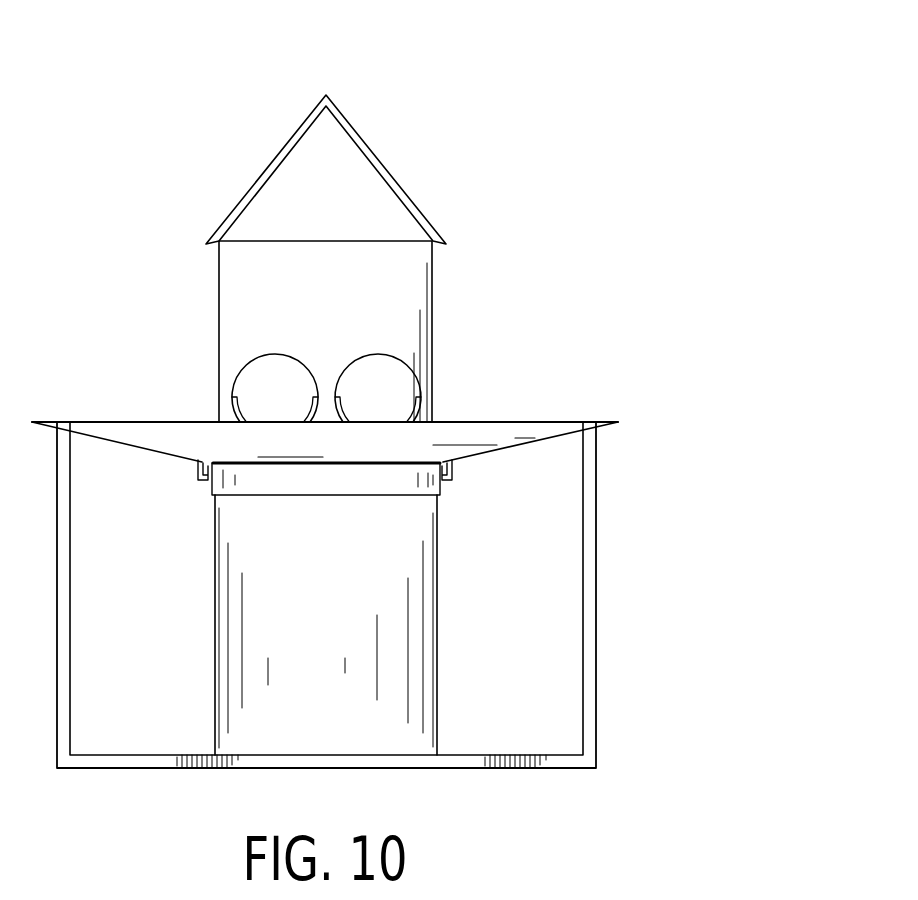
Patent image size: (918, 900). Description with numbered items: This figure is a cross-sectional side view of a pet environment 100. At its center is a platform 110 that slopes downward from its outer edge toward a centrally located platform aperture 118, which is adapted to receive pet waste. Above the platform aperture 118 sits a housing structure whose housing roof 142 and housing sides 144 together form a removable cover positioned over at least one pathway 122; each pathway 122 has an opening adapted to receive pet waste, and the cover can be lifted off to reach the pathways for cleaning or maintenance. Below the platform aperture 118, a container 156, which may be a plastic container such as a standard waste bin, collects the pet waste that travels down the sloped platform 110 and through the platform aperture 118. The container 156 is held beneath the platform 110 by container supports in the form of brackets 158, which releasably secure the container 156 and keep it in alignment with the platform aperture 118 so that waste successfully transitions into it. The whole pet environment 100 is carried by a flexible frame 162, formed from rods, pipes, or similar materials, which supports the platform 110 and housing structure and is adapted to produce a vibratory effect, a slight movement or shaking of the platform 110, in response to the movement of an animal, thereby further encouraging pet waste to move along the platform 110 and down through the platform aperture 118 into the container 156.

The pet environment 100 is at (523, 105).
The platform 110 is at (135, 423).
The platform aperture 118 is at (330, 462).
The pathway 122 is at (383, 402).
The housing roof 142 is at (392, 172).
The housing sides 144 is at (433, 283).
The container 156 is at (375, 595).
The brackets 158 is at (197, 470).
The flexible frame 162 is at (597, 542).